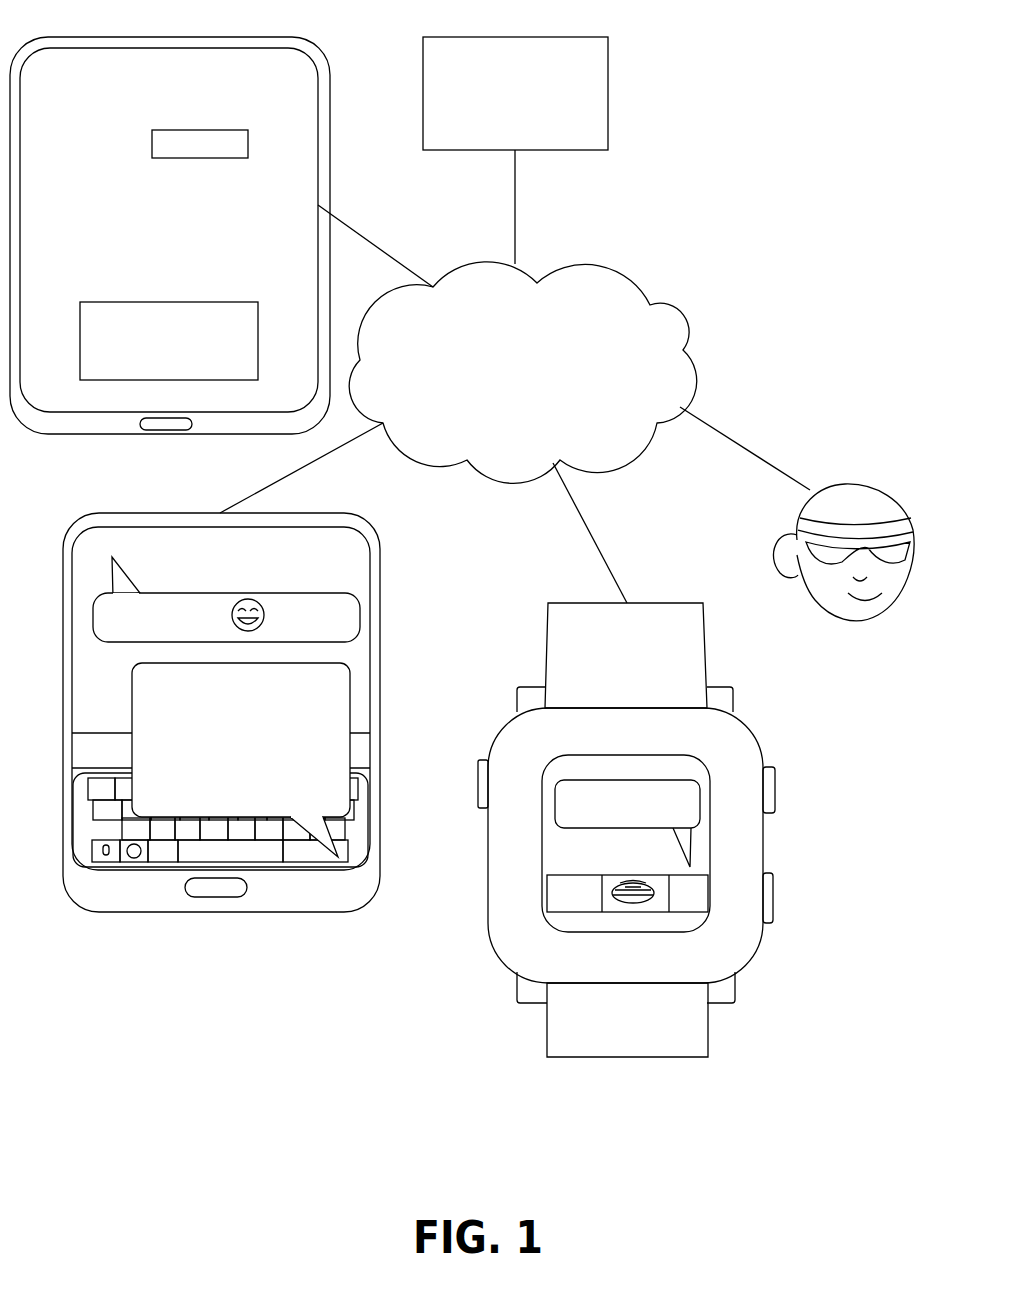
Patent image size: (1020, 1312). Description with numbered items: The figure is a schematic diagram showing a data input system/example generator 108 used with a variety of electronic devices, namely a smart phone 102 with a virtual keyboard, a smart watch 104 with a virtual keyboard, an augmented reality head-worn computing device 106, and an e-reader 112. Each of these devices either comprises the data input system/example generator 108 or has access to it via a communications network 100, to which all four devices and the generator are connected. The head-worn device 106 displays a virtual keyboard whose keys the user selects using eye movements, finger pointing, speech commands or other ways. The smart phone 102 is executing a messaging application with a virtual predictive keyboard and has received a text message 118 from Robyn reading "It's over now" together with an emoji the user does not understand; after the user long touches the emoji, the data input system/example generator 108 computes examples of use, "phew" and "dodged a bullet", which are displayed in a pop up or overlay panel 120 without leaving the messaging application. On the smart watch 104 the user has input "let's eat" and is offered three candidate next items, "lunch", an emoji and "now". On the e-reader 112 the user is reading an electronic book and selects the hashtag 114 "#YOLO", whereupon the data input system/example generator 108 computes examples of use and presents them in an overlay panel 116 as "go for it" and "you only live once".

The communications network 100 is at (523, 373).
The smart phone 102 is at (380, 690).
The smart watch 104 is at (752, 733).
The augmented reality head-worn computing device 106 is at (860, 490).
The data input system/example generator 108 is at (515, 93).
The e-reader 112 is at (330, 183).
The hashtag 114 is at (227, 128).
The overlay panel 116 is at (93, 367).
The text message 118 is at (97, 600).
The pop up or overlay panel 120 is at (143, 698).